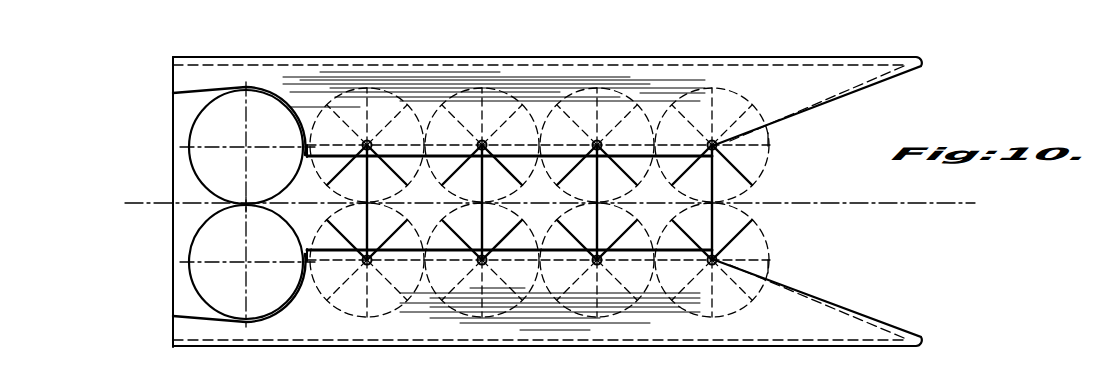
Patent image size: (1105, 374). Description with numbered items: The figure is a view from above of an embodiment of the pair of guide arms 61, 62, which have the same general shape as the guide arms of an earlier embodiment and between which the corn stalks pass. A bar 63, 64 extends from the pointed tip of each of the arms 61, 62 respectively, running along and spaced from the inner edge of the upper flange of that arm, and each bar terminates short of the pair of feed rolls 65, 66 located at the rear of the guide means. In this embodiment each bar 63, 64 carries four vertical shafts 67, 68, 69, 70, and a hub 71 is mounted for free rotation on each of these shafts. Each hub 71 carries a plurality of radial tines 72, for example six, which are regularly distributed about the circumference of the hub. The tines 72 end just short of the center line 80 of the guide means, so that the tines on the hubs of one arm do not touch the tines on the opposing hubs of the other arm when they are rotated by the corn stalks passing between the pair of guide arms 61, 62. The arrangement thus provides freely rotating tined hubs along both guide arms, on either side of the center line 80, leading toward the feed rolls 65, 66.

The guide arm 61 is at (853, 58).
The guide arm 62 is at (855, 322).
The bar 63 is at (850, 96).
The bar 64 is at (830, 290).
The feed roll 65 is at (203, 125).
The feed roll 66 is at (205, 244).
The vertical shaft 67 is at (370, 141).
The vertical shaft 68 is at (485, 141).
The vertical shaft 69 is at (600, 141).
The vertical shaft 70 is at (715, 141).
The hub 71 is at (355, 141).
The tines 72 is at (362, 138).
The center line 80 is at (876, 203).